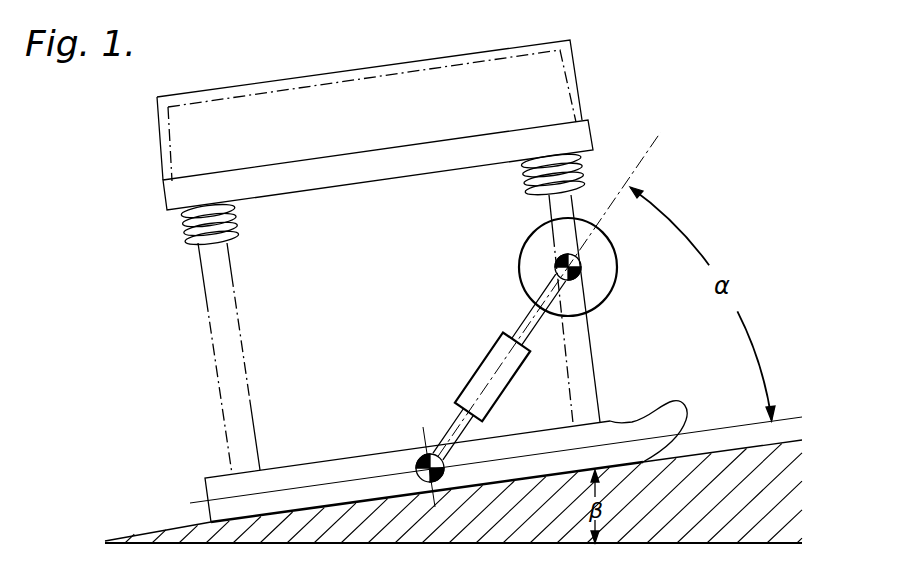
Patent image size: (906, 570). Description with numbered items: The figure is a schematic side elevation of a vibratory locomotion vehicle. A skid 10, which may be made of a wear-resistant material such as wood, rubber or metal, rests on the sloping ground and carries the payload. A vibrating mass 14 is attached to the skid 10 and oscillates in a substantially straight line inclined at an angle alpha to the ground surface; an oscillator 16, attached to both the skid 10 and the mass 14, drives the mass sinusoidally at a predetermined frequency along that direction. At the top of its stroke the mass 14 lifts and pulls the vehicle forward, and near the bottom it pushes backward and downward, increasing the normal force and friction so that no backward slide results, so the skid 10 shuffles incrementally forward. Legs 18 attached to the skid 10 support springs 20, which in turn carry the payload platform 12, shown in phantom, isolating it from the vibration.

The skid 10 is at (507, 446).
The platform 12 is at (593, 137).
The vibrating mass 14 is at (605, 286).
The oscillator 16 is at (488, 367).
The legs 18 is at (212, 288).
The springs 20 is at (237, 240).